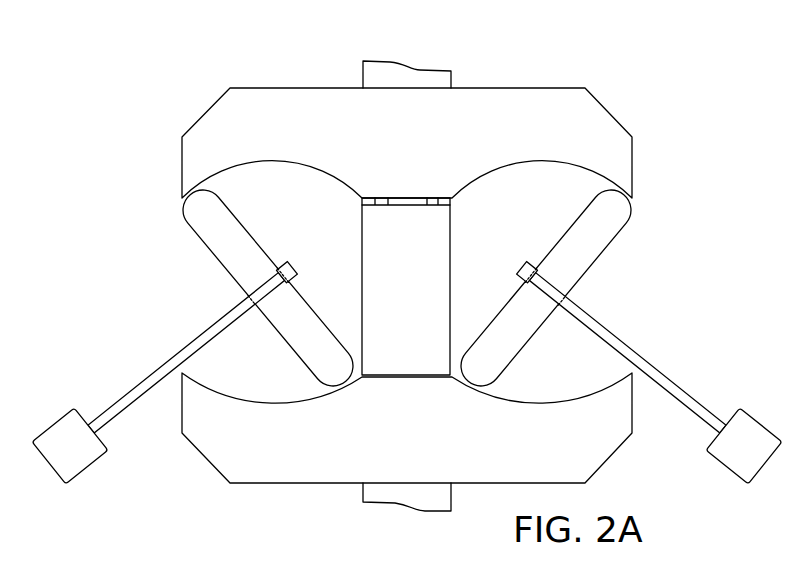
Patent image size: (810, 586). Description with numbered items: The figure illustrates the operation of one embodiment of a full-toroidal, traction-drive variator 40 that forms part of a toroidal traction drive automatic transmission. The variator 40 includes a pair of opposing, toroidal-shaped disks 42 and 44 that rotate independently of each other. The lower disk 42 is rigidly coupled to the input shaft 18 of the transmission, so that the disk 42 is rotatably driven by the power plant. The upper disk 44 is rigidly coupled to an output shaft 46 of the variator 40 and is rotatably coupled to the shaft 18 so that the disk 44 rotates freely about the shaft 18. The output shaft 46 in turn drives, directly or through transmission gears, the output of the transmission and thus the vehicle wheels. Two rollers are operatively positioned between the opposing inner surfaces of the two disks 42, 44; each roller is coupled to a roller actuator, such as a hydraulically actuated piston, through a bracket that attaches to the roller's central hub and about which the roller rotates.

The variator 40 is at (688, 120).
The toroidal-shaped disk 42 is at (255, 484).
The toroidal-shaped disk 44 is at (533, 88).
The output shaft 46 is at (389, 62).
The input shaft 18 is at (420, 512).